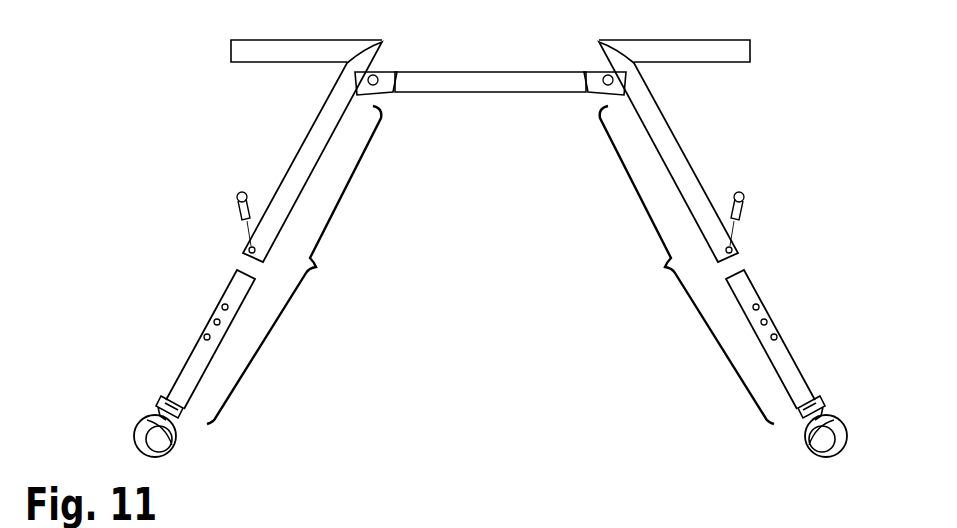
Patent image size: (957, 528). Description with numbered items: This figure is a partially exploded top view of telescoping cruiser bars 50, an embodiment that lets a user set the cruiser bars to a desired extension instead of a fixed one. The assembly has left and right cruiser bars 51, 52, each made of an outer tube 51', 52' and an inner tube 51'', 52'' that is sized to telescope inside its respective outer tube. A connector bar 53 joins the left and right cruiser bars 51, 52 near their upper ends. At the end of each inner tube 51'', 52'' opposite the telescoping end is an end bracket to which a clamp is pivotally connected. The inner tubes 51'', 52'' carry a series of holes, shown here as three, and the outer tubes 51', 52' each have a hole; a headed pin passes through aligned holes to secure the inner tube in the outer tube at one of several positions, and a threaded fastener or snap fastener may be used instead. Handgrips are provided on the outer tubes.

The telescoping cruiser bars 50 is at (538, 320).
The left cruiser bar 51 is at (687, 265).
The outer tube 51' is at (669, 152).
The inner tube 51'' is at (796, 339).
The right cruiser bar 52 is at (294, 265).
The outer tube 52' is at (305, 152).
The inner tube 52'' is at (185, 339).
The connector bar 53 is at (502, 83).